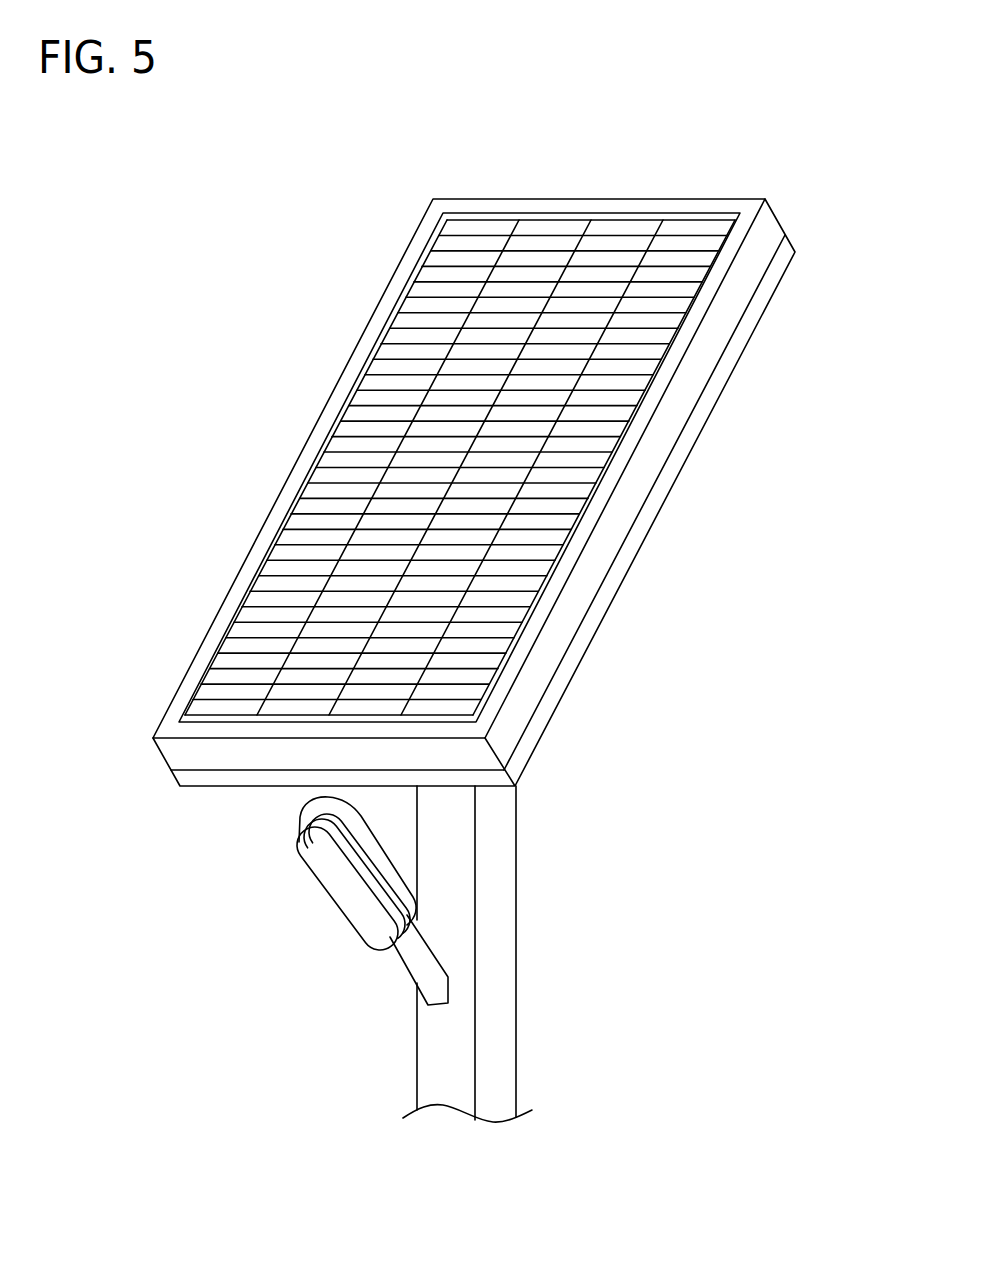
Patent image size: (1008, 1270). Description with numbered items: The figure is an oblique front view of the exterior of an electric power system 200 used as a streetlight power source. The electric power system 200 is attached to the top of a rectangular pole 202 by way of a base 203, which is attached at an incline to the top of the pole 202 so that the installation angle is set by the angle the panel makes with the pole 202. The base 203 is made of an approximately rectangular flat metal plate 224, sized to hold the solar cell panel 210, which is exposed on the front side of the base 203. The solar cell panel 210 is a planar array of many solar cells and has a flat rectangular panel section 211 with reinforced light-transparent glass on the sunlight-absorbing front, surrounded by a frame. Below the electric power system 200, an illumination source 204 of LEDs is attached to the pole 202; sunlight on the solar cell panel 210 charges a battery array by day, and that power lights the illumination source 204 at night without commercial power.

The electric power system 200 is at (740, 157).
The pole 202 is at (493, 1067).
The base 203 is at (707, 583).
The illumination source 204 is at (307, 816).
The solar cell panel 210 is at (213, 488).
The panel section 211 is at (540, 257).
The plate 224 is at (585, 652).